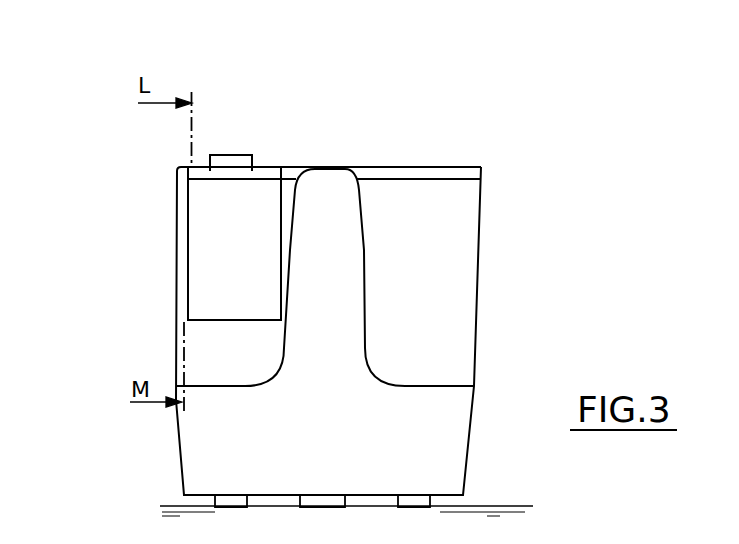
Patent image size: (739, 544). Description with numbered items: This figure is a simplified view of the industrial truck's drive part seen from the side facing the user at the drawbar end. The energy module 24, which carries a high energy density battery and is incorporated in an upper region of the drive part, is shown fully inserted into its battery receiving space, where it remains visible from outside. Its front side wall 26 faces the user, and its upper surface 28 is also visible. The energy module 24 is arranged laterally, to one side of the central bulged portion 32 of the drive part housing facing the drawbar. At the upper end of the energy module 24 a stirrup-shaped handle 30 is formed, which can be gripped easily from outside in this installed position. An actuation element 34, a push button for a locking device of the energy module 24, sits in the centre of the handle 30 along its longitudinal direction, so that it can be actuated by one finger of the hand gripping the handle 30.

The energy module 24 is at (220, 233).
The front side wall 26 is at (228, 295).
The upper surface 28 is at (273, 164).
The stirrup-shaped handle 30 is at (258, 158).
The central bulged portion 32 is at (330, 247).
The actuation element 34 is at (232, 160).